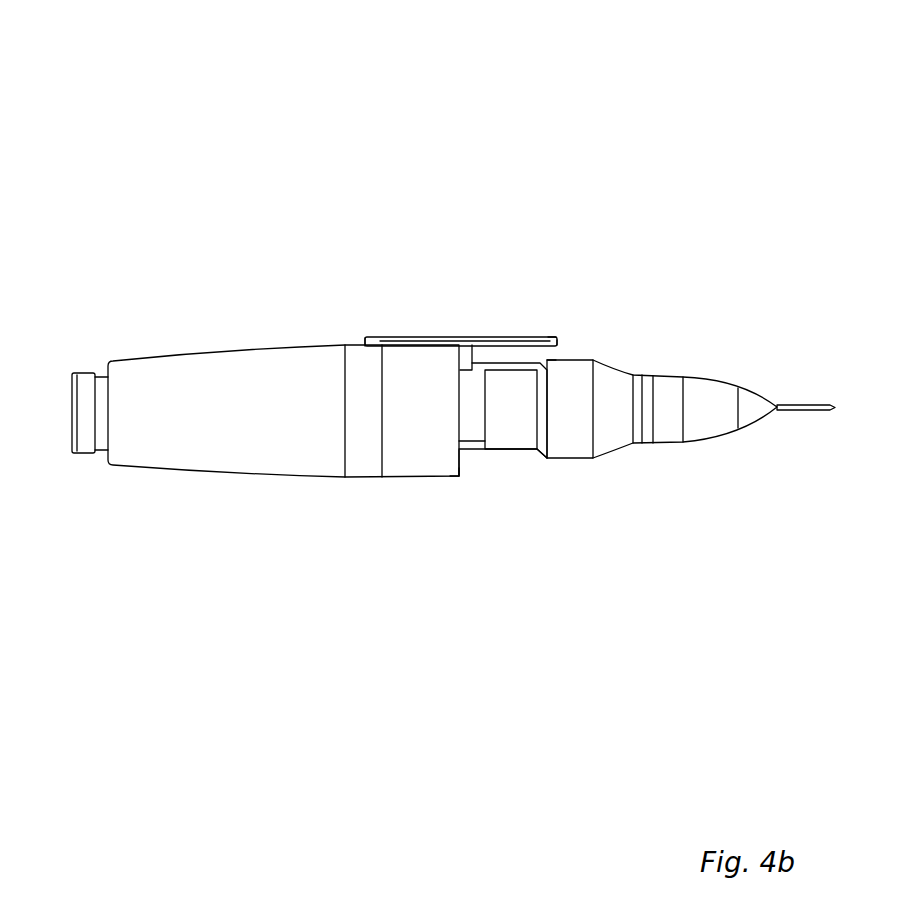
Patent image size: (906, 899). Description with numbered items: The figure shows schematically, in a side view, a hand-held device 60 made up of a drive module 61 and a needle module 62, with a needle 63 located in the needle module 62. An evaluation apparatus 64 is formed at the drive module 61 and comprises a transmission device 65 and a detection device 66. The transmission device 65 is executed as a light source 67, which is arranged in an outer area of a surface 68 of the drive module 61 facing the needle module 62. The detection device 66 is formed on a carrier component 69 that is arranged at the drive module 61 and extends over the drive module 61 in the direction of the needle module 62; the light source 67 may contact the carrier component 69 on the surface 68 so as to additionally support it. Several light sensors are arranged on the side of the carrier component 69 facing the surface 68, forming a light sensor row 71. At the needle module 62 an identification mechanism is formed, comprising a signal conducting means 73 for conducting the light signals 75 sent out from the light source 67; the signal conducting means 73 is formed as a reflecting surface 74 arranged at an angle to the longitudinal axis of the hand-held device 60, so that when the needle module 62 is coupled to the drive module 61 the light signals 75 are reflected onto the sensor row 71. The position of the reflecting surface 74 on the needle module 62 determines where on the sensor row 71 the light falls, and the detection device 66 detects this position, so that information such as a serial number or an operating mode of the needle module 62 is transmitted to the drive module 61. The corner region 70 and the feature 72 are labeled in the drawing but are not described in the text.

The hand-held device 60 is at (447, 168).
The drive module 61 is at (153, 353).
The needle module 62 is at (727, 382).
The needle 63 is at (810, 413).
The evaluation apparatus 64 is at (397, 337).
The transmission device 65 is at (457, 356).
The detection device 66 is at (555, 340).
The light source 67 is at (472, 363).
The surface 68 is at (460, 464).
The carrier component 69 is at (368, 338).
The housing corner 70 is at (458, 477).
The light sensor row 71 is at (558, 349).
The collar 72 is at (546, 452).
The signal conducting means 73 is at (550, 337).
The reflecting surface 74 is at (541, 434).
The light signals 75 is at (513, 363).